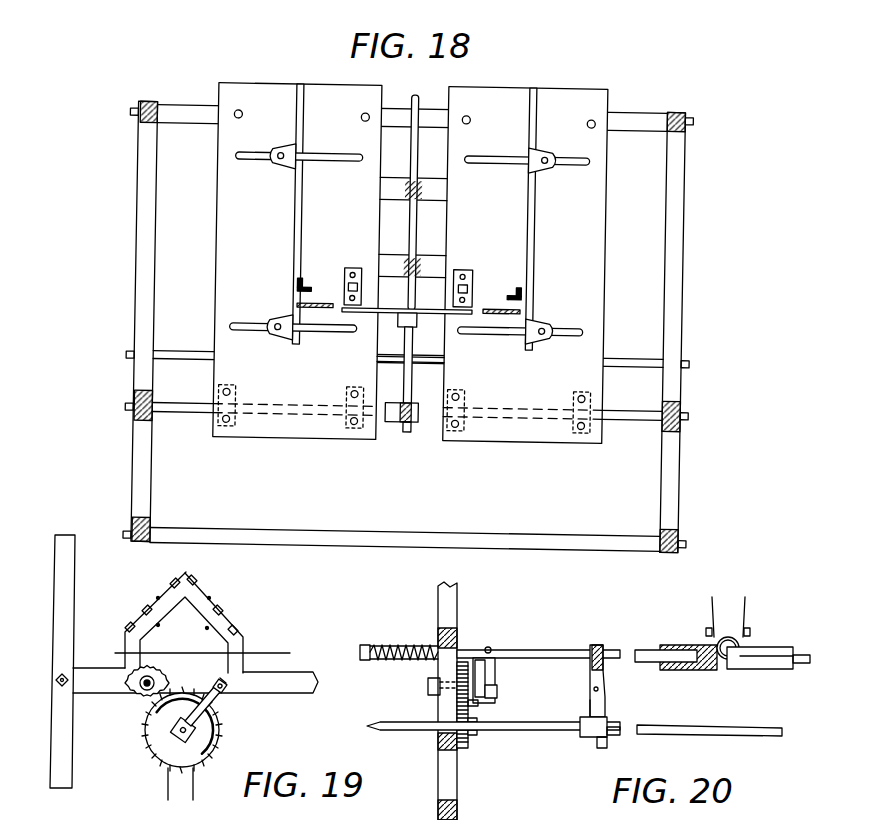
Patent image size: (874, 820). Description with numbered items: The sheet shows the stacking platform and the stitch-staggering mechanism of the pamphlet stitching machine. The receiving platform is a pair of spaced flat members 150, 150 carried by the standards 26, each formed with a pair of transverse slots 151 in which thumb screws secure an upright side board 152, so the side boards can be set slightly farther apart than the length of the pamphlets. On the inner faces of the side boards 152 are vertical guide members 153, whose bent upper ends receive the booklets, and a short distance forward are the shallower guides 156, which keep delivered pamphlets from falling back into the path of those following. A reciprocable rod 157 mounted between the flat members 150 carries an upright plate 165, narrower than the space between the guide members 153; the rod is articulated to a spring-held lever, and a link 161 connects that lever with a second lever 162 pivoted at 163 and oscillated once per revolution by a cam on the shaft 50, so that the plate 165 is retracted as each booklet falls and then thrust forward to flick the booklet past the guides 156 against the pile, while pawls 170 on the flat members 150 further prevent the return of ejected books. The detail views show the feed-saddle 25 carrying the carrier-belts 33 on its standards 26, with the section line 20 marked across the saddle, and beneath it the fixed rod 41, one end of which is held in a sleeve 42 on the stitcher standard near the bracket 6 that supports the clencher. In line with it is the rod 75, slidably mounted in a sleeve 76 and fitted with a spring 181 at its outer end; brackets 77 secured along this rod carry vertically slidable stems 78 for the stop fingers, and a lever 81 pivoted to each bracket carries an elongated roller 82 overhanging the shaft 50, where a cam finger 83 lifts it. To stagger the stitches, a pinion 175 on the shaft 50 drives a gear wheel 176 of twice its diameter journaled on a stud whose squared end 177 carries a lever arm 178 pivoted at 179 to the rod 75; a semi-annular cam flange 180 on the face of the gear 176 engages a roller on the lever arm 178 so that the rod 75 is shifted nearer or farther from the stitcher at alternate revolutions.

In FIG. 18, the flat members 150 is at (249, 80).
In FIG. 18, the transverse slots 151 is at (233, 159).
In FIG. 18, the side board 152 is at (293, 191).
In FIG. 18, the vertical guide members 153 is at (320, 312).
In FIG. 18, the shallow guides 156 is at (320, 272).
In FIG. 18, the reciprocable rod 157 is at (415, 218).
In FIG. 18, the link 161 is at (413, 379).
In FIG. 18, the second lever 162 is at (410, 432).
In FIG. 18, the pivot 163 is at (387, 421).
In FIG. 18, the upright plate 165 is at (440, 316).
In FIG. 18, the pawls 170 is at (361, 285).
In FIG. 19, the frame bar 20 is at (195, 669).
In FIG. 19, the feed-saddle 25 is at (188, 576).
In FIG. 19, the standards 26 is at (55, 735).
In FIG. 20, the standards 26 is at (450, 612).
In FIG. 19, the carrier-belts 33 is at (210, 598).
In FIG. 19, the shaft 50 is at (142, 693).
In FIG. 20, the shaft 50 is at (537, 732).
In FIG. 19, the rod 75 is at (226, 679).
In FIG. 20, the rod 75 is at (543, 652).
In FIG. 19, the pinion 175 is at (157, 663).
In FIG. 20, the pinion 175 is at (468, 743).
In FIG. 19, the gear wheel 176 is at (153, 747).
In FIG. 20, the gear wheel 176 is at (455, 668).
In FIG. 19, the squared end of stud 177 is at (179, 740).
In FIG. 20, the squared end of stud 177 is at (497, 694).
In FIG. 19, the lever arm 178 is at (207, 708).
In FIG. 20, the lever arm 178 is at (493, 673).
In FIG. 19, the pivot 179 is at (230, 687).
In FIG. 20, the pivot 179 is at (489, 648).
In FIG. 19, the semi-annular cam flange 180 is at (218, 742).
In FIG. 20, the semi-annular cam flange 180 is at (470, 705).
In FIG. 20, the spring 181 is at (392, 634).
In FIG. 20, the brackets 77 is at (601, 645).
In FIG. 20, the stem 78 is at (605, 688).
In FIG. 20, the lever 81 is at (590, 708).
In FIG. 20, the roller 82 is at (612, 725).
In FIG. 20, the cam finger 83 is at (607, 745).
In FIG. 20, the sleeve 76 is at (678, 645).
In FIG. 20, the bracket 6 is at (728, 628).
In FIG. 20, the sleeve 42 is at (775, 648).
In FIG. 20, the fixed rod 41 is at (802, 664).